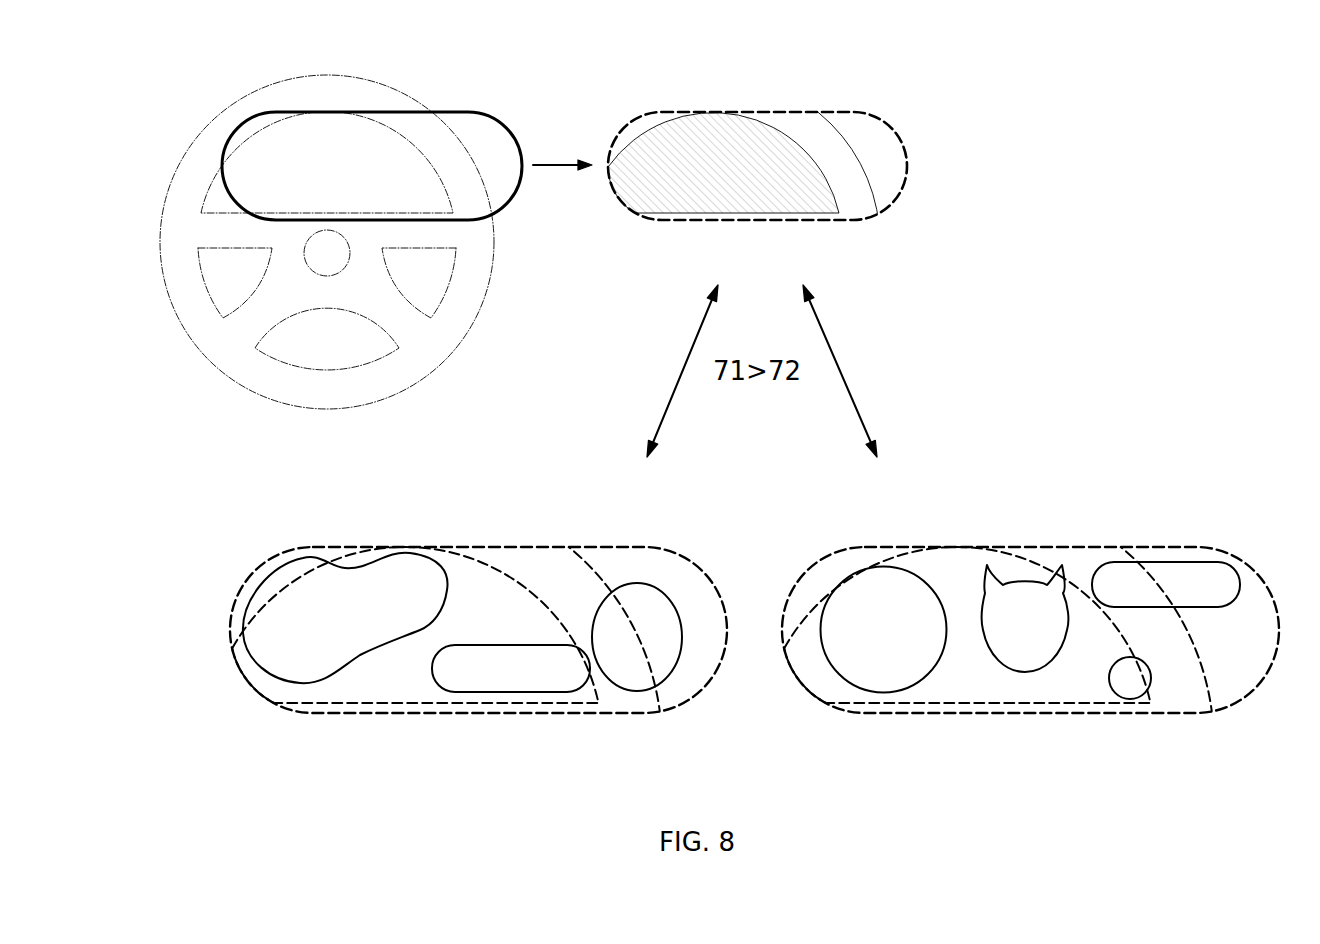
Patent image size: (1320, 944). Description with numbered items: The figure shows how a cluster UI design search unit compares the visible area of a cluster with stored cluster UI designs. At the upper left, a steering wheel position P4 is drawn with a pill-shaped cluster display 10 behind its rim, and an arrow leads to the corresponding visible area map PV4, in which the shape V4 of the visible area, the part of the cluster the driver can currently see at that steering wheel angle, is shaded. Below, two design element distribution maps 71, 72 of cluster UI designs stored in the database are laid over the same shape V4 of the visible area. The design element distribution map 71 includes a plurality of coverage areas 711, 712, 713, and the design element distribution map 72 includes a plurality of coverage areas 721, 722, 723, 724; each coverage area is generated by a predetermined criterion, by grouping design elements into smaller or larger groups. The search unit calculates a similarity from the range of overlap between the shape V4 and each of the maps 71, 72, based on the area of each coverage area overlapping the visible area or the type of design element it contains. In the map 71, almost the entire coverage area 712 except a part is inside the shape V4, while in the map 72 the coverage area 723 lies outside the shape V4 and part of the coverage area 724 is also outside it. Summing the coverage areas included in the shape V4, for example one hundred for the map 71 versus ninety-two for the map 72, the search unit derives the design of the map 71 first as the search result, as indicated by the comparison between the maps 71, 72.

The display device (pill-shaped display) 10 is at (507, 128).
The steering wheel in fourth position P4 is at (327, 268).
The visible area map PV4 is at (757, 190).
The shape of the visible area V4 is at (765, 138).
The design element distribution map 71 is at (363, 713).
The coverage area 711 is at (447, 570).
The coverage area 712 is at (660, 587).
The coverage area 713 is at (500, 693).
The design element distribution map 72 is at (913, 713).
The coverage area 721 is at (832, 560).
The coverage area 722 is at (1010, 673).
The coverage area 723 is at (1195, 562).
The coverage area 724 is at (1112, 690).